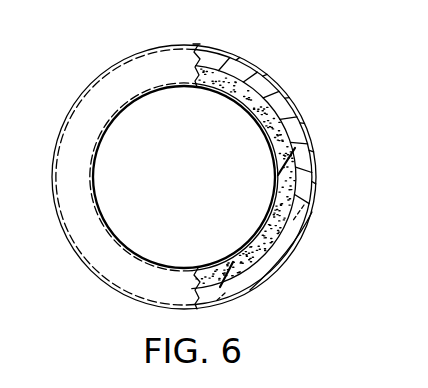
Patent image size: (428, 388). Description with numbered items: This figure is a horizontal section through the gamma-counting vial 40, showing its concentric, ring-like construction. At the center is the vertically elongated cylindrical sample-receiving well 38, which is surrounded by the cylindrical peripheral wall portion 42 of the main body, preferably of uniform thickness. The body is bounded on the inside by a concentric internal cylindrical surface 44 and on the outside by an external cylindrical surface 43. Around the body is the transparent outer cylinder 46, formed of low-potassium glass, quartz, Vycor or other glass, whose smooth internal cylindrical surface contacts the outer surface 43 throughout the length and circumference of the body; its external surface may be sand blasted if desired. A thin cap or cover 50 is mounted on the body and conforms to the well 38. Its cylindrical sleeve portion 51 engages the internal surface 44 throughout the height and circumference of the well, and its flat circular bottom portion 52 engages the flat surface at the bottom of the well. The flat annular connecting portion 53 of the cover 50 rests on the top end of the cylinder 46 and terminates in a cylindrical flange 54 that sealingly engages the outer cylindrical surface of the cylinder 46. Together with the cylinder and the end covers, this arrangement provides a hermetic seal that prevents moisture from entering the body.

The sample-receiving well 38 is at (262, 157).
The gamma-counting vial 40 is at (295, 102).
The peripheral wall portion 42 is at (290, 185).
The external cylindrical surface 43 is at (293, 230).
The internal cylindrical surface 44 is at (258, 100).
The transparent outer cylinder 46 is at (258, 78).
The cap or cover 50 is at (263, 227).
The cylindrical sleeve portion 51 is at (277, 178).
The flat circular bottom portion 52 is at (150, 112).
The flat annular connecting portion 53 is at (70, 172).
The cylindrical flange 54 is at (102, 278).